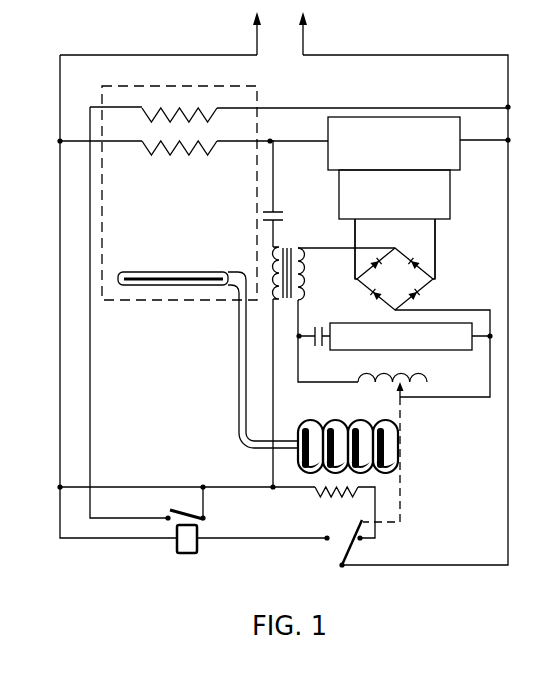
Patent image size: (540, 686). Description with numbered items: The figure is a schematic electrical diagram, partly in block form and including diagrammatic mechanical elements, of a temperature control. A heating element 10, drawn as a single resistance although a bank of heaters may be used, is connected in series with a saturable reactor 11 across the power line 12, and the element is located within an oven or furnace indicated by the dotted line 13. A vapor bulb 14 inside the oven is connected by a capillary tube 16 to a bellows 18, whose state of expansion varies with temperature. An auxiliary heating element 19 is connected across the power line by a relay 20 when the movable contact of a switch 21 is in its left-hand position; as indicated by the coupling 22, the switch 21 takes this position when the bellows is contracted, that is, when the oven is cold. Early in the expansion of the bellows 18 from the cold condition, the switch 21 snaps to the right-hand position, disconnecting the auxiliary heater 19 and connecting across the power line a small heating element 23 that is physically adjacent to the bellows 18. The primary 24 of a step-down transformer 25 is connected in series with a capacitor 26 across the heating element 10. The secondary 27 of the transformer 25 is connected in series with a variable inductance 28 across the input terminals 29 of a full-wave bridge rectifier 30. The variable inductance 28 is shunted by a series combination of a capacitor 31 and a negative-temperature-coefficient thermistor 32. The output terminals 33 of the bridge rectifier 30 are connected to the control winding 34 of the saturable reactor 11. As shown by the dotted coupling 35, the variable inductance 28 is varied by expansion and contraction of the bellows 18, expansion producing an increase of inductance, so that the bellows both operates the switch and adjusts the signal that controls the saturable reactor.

The heating element 10 is at (150, 153).
The saturable reactor 11 is at (452, 155).
The power line 12 is at (292, 30).
The dotted line 13 is at (258, 154).
The vapor bulb 14 is at (133, 273).
The capillary tube 16 is at (242, 345).
The bellows 18 is at (336, 427).
The auxiliary heating element 19 is at (163, 108).
The relay 20 is at (207, 522).
The switch 21 is at (344, 548).
The coupling 22 is at (402, 505).
The small heating element 23 is at (352, 488).
The primary 24 is at (273, 260).
The step-down transformer 25 is at (286, 244).
The capacitor 26 is at (276, 211).
The secondary 27 is at (305, 275).
The variable inductance 28 is at (380, 377).
The input terminals 29 is at (393, 308).
The full-wave bridge rectifier 30 is at (395, 279).
The capacitor 31 is at (316, 327).
The negative-temperature-coefficient thermistor 32 is at (460, 350).
The output terminals 33 is at (430, 280).
The control winding 34 is at (450, 207).
The dotted coupling 35 is at (402, 404).